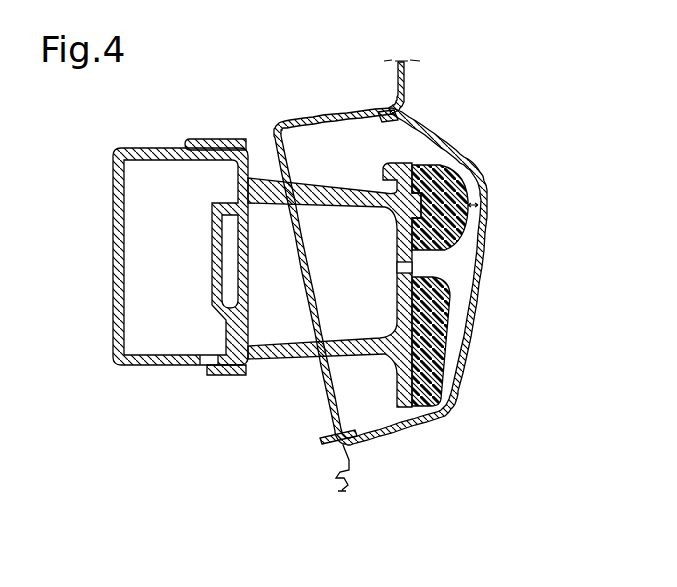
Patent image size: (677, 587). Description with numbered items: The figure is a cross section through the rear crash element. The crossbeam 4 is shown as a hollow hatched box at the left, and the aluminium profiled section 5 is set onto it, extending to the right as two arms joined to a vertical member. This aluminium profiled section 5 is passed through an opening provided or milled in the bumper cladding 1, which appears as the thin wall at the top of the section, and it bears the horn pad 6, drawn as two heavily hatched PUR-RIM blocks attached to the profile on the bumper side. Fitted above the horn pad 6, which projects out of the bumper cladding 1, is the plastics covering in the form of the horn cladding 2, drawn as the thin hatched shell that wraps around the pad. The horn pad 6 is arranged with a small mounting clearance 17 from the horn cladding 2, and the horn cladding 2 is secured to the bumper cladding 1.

The bumper cladding 1 is at (407, 80).
The horn cladding 2 is at (485, 224).
The crossbeam 4 is at (113, 200).
The aluminium profiled section 5 is at (240, 258).
The horn pad 6 is at (450, 240).
The mounting clearance 17 is at (484, 191).